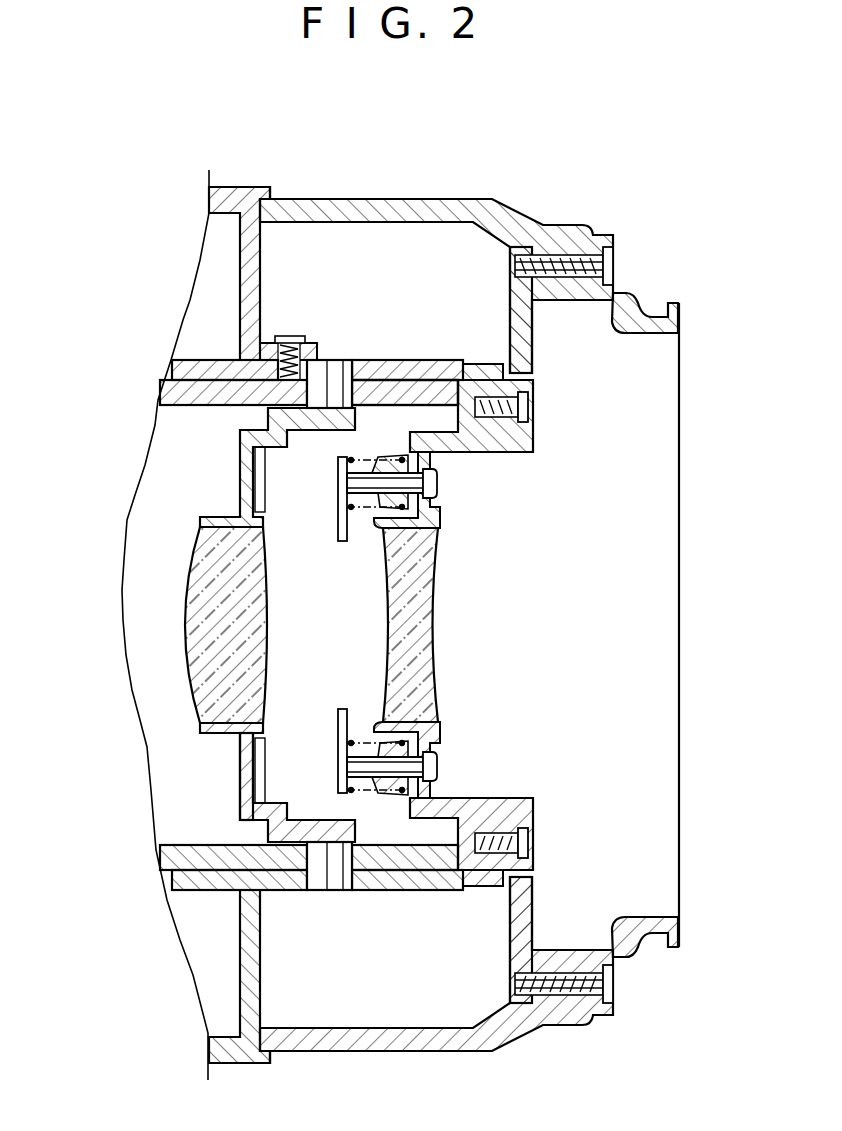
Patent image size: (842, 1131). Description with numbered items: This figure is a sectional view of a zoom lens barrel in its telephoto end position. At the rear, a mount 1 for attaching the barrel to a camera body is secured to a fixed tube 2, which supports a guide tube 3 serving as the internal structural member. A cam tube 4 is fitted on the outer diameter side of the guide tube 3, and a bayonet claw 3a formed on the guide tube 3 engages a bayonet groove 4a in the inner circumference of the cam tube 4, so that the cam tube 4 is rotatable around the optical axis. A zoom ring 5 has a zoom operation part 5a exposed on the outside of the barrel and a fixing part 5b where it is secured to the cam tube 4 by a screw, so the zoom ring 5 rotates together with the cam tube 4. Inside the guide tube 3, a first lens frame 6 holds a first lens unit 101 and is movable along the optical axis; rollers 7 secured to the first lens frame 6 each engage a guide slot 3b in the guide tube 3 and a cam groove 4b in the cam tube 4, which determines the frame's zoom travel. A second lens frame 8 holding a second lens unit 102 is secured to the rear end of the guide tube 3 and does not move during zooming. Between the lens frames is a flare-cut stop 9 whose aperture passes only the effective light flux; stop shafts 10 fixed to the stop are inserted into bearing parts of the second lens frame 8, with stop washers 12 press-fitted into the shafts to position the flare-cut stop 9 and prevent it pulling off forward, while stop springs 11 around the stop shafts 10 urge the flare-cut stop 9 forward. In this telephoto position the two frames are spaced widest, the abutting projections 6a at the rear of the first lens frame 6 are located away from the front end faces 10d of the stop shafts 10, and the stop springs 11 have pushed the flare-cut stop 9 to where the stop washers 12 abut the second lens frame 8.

The mount 1 is at (628, 305).
The fixed tube 2 is at (503, 225).
The guide tube 3 is at (175, 392).
The bayonet claw 3a is at (483, 355).
The guide slot 3b is at (240, 403).
The cam tube 4 is at (183, 370).
The bayonet groove 4a is at (517, 240).
The cam groove 4b is at (362, 478).
The zoom ring 5 is at (230, 200).
The zoom operation part 5a is at (260, 195).
The fixing part 5b is at (312, 345).
The first lens frame 6 is at (238, 446).
The abutting projections 6a is at (258, 765).
The rollers 7 is at (325, 373).
The second lens frame 8 is at (533, 433).
The flare-cut stop 9 is at (438, 565).
The stop shafts 10 is at (390, 470).
The front end faces 10d is at (237, 474).
The stop springs 11 is at (428, 383).
The stop washers 12 is at (437, 497).
The first lens unit 101 is at (186, 596).
The second lens unit 102 is at (438, 677).